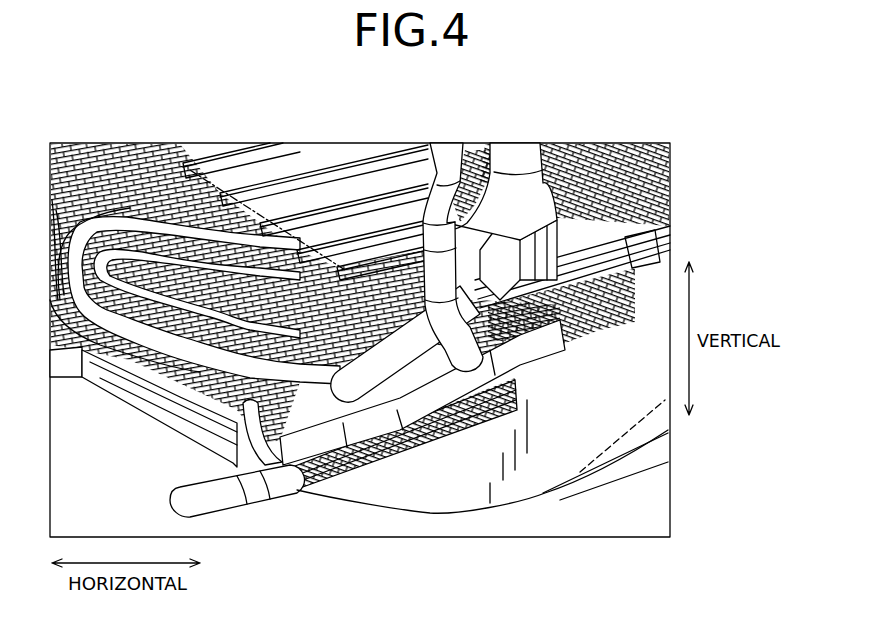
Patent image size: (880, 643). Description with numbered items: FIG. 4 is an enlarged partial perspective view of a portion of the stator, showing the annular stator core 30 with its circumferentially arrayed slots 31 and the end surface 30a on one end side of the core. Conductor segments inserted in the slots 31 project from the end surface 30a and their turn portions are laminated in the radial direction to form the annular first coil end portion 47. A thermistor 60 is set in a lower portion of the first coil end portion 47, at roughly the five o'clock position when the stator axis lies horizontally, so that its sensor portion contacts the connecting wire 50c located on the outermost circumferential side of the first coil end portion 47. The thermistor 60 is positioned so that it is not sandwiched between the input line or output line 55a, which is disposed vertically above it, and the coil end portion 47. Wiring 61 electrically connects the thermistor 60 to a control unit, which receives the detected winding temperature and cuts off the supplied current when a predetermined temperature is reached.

The stator core 30 is at (343, 497).
The end surface 30a is at (547, 470).
The slots 31 is at (288, 170).
The first coil end portion 47 is at (107, 180).
The connecting wire 50c is at (517, 320).
The input line or output line 55a is at (402, 345).
The thermistor 60 is at (430, 400).
The wiring 61 is at (460, 183).